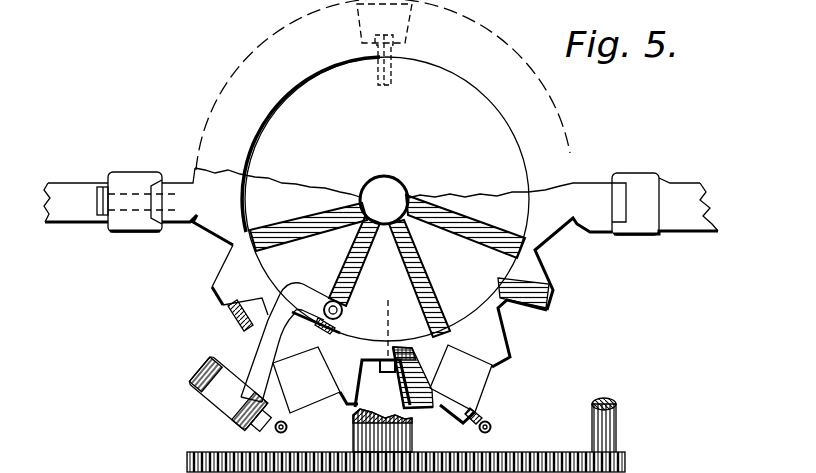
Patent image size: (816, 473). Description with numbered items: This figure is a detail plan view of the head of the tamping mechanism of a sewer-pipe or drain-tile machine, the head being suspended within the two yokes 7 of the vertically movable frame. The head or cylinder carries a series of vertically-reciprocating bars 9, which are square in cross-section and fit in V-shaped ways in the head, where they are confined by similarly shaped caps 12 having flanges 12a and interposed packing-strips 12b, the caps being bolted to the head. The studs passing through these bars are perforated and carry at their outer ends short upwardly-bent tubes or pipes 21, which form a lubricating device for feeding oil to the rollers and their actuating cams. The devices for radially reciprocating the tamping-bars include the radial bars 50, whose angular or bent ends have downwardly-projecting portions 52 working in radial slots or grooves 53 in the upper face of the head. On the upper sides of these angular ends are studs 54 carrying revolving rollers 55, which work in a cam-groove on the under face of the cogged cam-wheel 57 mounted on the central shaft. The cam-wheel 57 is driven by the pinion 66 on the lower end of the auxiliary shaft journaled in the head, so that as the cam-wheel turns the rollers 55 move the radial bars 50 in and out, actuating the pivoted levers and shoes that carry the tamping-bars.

The yokes 7 is at (85, 196).
The vertically-reciprocating bars 9 is at (382, 379).
The caps 12 is at (309, 405).
The flanges 12a is at (542, 355).
The packing-strips 12b is at (447, 353).
The upwardly-bent tubes or pipes 21 is at (387, 428).
The radial bars 50 is at (272, 344).
The downwardly-projecting portions 52 is at (387, 226).
The radial slots or grooves 53 is at (437, 271).
The studs 54 is at (344, 306).
The revolving rollers 55 is at (342, 328).
The cam-wheel 57 is at (406, 440).
The pinion 66 is at (589, 425).